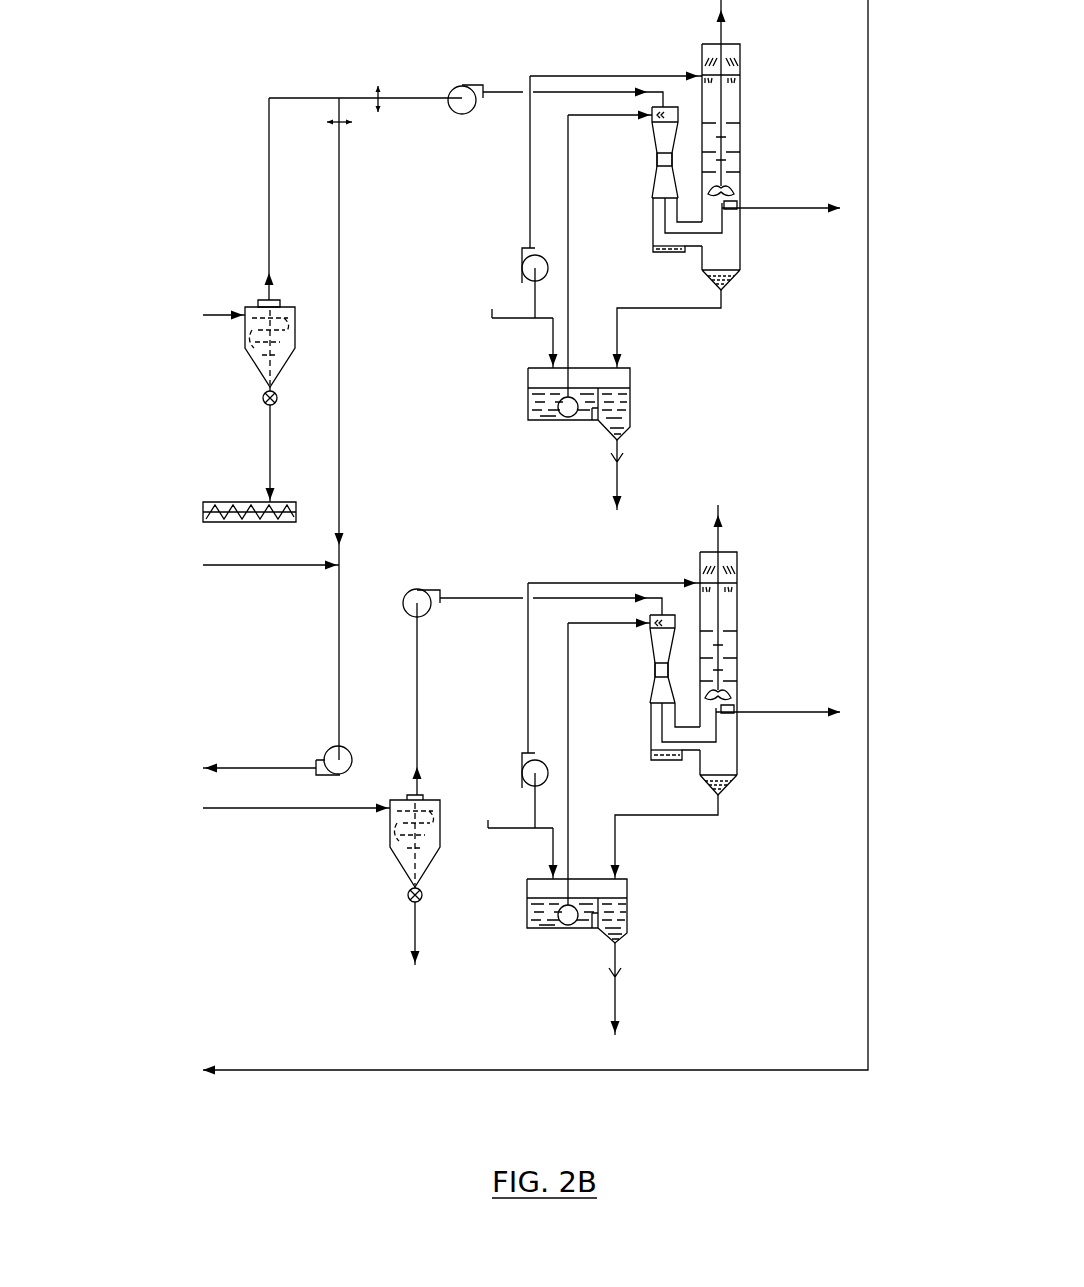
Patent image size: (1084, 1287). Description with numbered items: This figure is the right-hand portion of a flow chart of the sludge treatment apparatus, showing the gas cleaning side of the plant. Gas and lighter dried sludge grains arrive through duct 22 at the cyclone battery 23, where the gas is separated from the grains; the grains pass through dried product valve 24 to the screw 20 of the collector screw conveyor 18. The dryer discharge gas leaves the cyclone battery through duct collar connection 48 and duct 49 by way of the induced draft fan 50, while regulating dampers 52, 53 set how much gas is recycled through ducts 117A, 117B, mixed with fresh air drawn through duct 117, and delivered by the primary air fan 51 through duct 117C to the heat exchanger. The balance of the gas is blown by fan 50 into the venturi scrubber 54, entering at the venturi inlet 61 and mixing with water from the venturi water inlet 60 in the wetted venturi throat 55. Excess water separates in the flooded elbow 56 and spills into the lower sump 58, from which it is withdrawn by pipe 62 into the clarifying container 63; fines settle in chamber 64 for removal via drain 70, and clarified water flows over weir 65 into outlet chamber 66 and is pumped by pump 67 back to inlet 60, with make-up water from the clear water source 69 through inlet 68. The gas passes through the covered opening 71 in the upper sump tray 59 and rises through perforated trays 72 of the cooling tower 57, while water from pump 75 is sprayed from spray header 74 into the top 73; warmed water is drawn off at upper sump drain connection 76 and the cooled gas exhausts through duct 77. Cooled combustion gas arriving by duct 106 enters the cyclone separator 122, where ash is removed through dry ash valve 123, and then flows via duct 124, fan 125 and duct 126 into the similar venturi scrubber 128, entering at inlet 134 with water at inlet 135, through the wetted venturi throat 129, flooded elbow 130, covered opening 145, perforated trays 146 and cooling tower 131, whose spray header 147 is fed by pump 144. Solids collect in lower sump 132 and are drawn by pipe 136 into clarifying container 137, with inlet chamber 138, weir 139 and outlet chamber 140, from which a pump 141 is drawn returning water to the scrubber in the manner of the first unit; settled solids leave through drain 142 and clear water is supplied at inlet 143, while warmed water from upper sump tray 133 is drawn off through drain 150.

The collector screw conveyor 18 is at (235, 502).
The screw 20 is at (245, 519).
The duct 22 is at (216, 313).
The cyclone battery 23 is at (250, 337).
The dried product valve 24 is at (262, 402).
The duct collar connection 48 is at (276, 300).
The duct 49 is at (268, 225).
The induced draft fan 50 is at (452, 111).
The primary air fan 51 is at (352, 760).
The regulating damper 52 is at (378, 86).
The regulating damper 53 is at (352, 122).
The venturi scrubber 54 is at (650, 223).
The wetted venturi throat 55 is at (655, 168).
The flooded elbow 56 is at (670, 256).
The cooling tower 57 is at (730, 152).
The lower sump 58 is at (732, 283).
The upper sump tray 59 is at (728, 218).
The venturi water inlet 60 is at (650, 122).
The venturi gas inlet 61 is at (662, 97).
The pipe 62 is at (723, 315).
The clarifying container 63 is at (633, 408).
The chamber 64 is at (622, 392).
The weir 65 is at (594, 412).
The outlet chamber 66 is at (530, 398).
The pump 67 is at (566, 418).
The inlet 68 is at (553, 366).
The clear water source 69 is at (492, 322).
The drain 70 is at (620, 475).
The covered opening 71 is at (734, 190).
The perforated trays 72 is at (730, 125).
The top of cooling tower 73 is at (735, 60).
The spray header 74 is at (736, 82).
The pump 75 is at (522, 266).
The upper sump drain connection 76 is at (738, 212).
The duct 77 is at (725, 32).
The duct 106 is at (292, 810).
The duct 117 is at (260, 567).
The duct 117A is at (342, 403).
The duct 117B is at (339, 648).
The duct 117C is at (297, 767).
The cyclone separator 122 is at (392, 830).
The dry ash valve 123 is at (408, 897).
The duct 124 is at (418, 720).
The fan 125 is at (420, 592).
The duct 126 is at (470, 597).
The venturi scrubber 128 is at (648, 702).
The wetted venturi throat 129 is at (653, 674).
The flooded elbow 130 is at (668, 760).
The cooling tower 131 is at (730, 652).
The lower sump 132 is at (728, 793).
The upper sump tray 133 is at (728, 722).
The venturi gas inlet 134 is at (660, 607).
The venturi water inlet 135 is at (650, 630).
The pipe 136 is at (680, 818).
The clarifying container 137 is at (628, 923).
The inlet chamber 138 is at (612, 906).
The weir 139 is at (594, 918).
The outlet chamber 140 is at (530, 908).
The recirculation pump 141 is at (566, 926).
The drain 142 is at (618, 995).
The clear water inlet 143 is at (548, 852).
The pump 144 is at (522, 766).
The covered opening 145 is at (735, 694).
The perforated trays 146 is at (730, 632).
The spray header 147 is at (737, 588).
The drain 150 is at (738, 718).